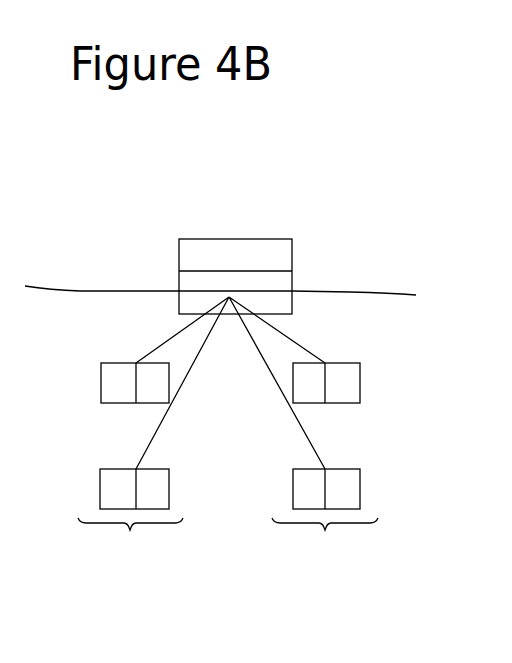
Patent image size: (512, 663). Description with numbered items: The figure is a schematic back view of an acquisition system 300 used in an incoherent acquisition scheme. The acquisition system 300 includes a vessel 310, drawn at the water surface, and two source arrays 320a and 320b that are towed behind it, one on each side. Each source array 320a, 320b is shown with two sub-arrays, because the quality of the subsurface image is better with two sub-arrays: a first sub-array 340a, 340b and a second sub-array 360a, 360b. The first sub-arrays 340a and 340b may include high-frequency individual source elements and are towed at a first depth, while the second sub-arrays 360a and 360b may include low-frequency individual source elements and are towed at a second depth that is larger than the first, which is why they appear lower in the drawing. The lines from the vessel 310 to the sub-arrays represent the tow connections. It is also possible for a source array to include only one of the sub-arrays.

The acquisition system 300 is at (265, 127).
The vessel 310 is at (292, 252).
The source array 320a is at (118, 441).
The source array 320b is at (357, 446).
The first sub-array 340a is at (115, 372).
The first sub-array 340b is at (343, 372).
The second sub-array 360a is at (110, 480).
The second sub-array 360b is at (346, 480).